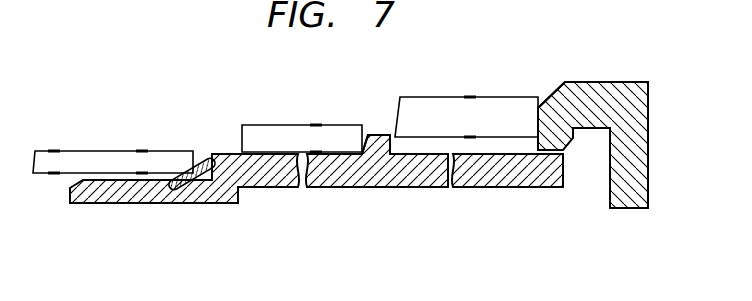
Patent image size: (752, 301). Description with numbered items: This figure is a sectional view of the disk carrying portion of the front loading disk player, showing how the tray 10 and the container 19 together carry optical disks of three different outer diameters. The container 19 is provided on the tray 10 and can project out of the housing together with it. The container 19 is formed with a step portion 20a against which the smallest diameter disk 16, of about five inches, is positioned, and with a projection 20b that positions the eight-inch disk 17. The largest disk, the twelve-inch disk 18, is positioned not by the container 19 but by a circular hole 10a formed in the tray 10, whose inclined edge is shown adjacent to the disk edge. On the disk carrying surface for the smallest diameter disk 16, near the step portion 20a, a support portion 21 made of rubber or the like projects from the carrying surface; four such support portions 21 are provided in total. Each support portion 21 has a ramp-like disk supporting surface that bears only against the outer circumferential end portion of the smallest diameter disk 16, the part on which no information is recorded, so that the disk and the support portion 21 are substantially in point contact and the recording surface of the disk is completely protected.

The tray 10 is at (603, 82).
The circular hole 10a is at (538, 120).
The smallest diameter disk 16 is at (124, 150).
The 8-inch disk 17 is at (293, 124).
The 12-inch disk 18 is at (442, 97).
The container 19 is at (403, 188).
The step portion 20a is at (209, 163).
The projection 20b is at (379, 135).
The support portion 21 is at (198, 164).